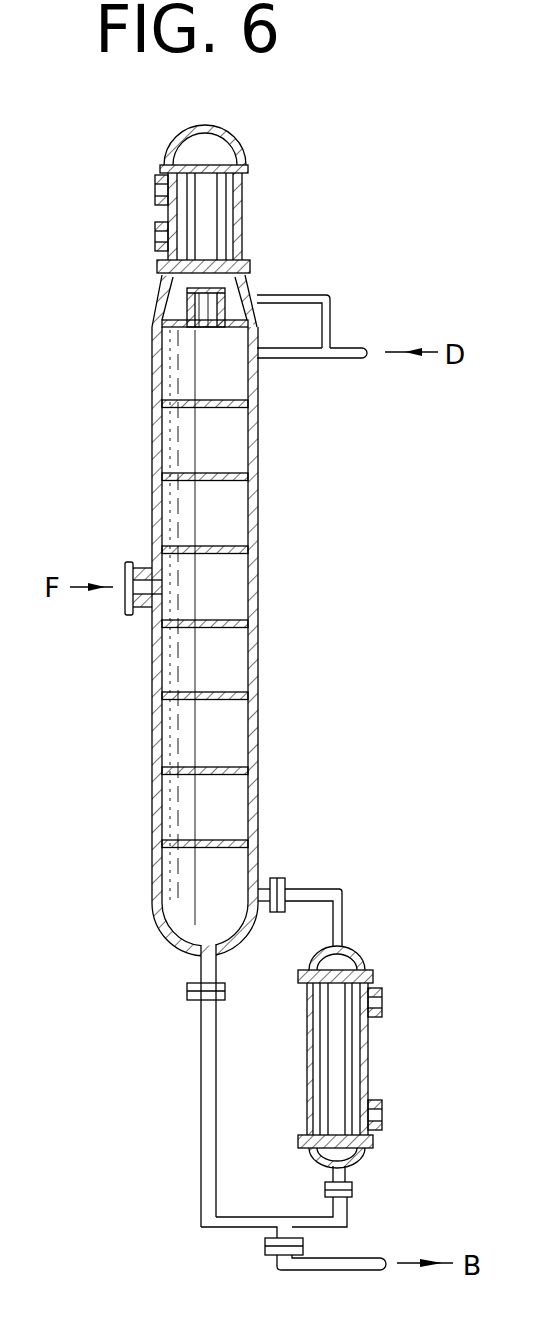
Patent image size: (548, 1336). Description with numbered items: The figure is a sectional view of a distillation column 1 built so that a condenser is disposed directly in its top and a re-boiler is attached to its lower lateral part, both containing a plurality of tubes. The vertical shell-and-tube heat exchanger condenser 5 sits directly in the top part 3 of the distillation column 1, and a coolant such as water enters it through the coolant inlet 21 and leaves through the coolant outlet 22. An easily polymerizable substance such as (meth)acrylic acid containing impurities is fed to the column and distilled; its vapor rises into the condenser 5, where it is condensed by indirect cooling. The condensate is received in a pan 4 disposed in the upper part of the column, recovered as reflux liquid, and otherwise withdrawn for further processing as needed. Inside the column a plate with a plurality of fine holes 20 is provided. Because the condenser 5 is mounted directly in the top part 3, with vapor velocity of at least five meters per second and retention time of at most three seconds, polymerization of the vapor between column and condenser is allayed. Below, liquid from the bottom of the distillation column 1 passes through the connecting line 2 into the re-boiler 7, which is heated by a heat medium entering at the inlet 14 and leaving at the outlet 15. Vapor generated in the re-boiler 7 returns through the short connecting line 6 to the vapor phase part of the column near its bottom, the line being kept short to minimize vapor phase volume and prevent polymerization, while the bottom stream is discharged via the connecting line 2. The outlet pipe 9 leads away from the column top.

The distillation column 1 is at (259, 575).
The connecting line 2 is at (200, 1108).
The top part of the distillation column 3 is at (161, 302).
The pan 4 is at (188, 330).
The condenser 5 is at (242, 214).
The connecting line 6 is at (338, 890).
The re-boiler 7 is at (370, 1062).
The distillate outlet pipe 9 is at (331, 299).
The inlet of a heat medium 14 is at (384, 1003).
The outlet of a heat medium 15 is at (384, 1116).
The plate with a plurality of fine holes 20 is at (209, 763).
The inlet of a coolant 21 is at (154, 238).
The outlet of a coolant 22 is at (154, 191).